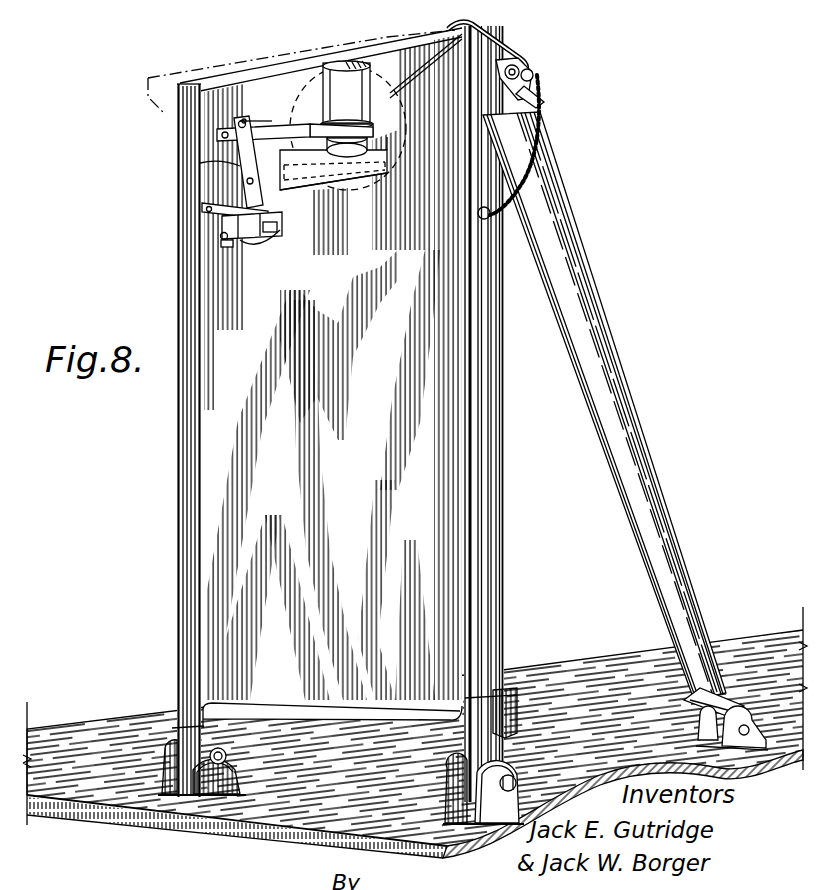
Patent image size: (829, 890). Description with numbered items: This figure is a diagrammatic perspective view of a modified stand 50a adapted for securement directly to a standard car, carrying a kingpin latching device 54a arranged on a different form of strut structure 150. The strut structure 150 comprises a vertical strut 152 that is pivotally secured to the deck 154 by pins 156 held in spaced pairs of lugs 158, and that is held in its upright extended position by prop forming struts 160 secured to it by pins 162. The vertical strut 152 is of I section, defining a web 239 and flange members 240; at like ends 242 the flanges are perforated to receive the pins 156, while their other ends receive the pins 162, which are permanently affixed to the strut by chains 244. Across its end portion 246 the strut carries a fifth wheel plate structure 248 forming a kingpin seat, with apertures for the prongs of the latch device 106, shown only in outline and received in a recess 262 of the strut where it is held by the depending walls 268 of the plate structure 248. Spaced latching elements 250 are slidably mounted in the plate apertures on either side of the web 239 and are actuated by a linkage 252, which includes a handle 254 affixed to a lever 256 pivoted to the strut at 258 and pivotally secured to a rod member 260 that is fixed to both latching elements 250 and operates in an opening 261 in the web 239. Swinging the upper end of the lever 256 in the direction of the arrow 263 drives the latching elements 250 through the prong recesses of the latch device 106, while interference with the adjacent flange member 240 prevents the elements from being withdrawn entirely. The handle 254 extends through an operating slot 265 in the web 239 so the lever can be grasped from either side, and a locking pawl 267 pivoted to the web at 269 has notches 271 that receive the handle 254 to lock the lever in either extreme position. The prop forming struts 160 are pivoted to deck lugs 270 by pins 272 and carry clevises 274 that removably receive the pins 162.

The stand 50a is at (604, 406).
The kingpin latching device 54a is at (320, 54).
The latch device 106 is at (357, 194).
The strut structure 150 is at (604, 406).
The vertical strut 152 is at (318, 414).
The deck 154 is at (257, 824).
The pins 156 is at (514, 783).
The lugs 158 is at (166, 768).
The prop forming struts 160 is at (638, 454).
The pins 162 is at (538, 70).
The web 239 is at (430, 444).
The flange members 240 is at (490, 515).
The ends 242 is at (177, 731).
The chains 244 is at (538, 138).
The end portion 246 is at (488, 58).
The fifth wheel plate structure 248 is at (482, 30).
The latching elements 250 is at (318, 126).
The linkage 252 is at (228, 182).
The handle 254 is at (247, 240).
The lever 256 is at (278, 190).
The pivot 258 is at (242, 176).
The rod member 260 is at (244, 120).
The opening 261 is at (215, 142).
The recess 262 is at (385, 140).
The arrow 263 is at (270, 120).
The operating slot 265 is at (226, 248).
The locking pawl 267 is at (222, 218).
The depending walls 268 is at (412, 68).
The pivot 269 is at (216, 208).
The deck lugs 270 is at (760, 734).
The notches 271 is at (220, 236).
The pins 272 is at (740, 722).
The clevises 274 is at (521, 104).